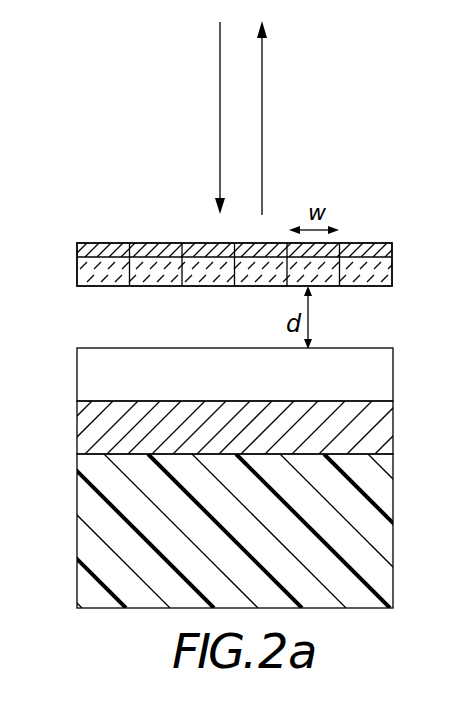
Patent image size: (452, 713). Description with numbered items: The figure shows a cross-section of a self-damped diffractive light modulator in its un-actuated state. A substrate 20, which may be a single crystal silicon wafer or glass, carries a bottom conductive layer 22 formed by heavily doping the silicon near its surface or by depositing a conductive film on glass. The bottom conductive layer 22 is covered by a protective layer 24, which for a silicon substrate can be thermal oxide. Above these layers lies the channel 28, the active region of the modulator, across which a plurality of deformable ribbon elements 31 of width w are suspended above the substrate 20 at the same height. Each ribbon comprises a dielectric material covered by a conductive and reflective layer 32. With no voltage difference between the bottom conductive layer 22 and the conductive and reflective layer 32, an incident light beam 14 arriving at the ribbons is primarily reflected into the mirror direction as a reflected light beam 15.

The incident light beam 14 is at (220, 100).
The reflected light beam 15 is at (262, 70).
The substrate 20 is at (83, 506).
The bottom conductive layer 22 is at (88, 430).
The protective layer 24 is at (80, 380).
The channel 28 is at (203, 266).
The deformable ribbon elements 31 is at (197, 272).
The conductive and reflective layer 32 is at (91, 245).